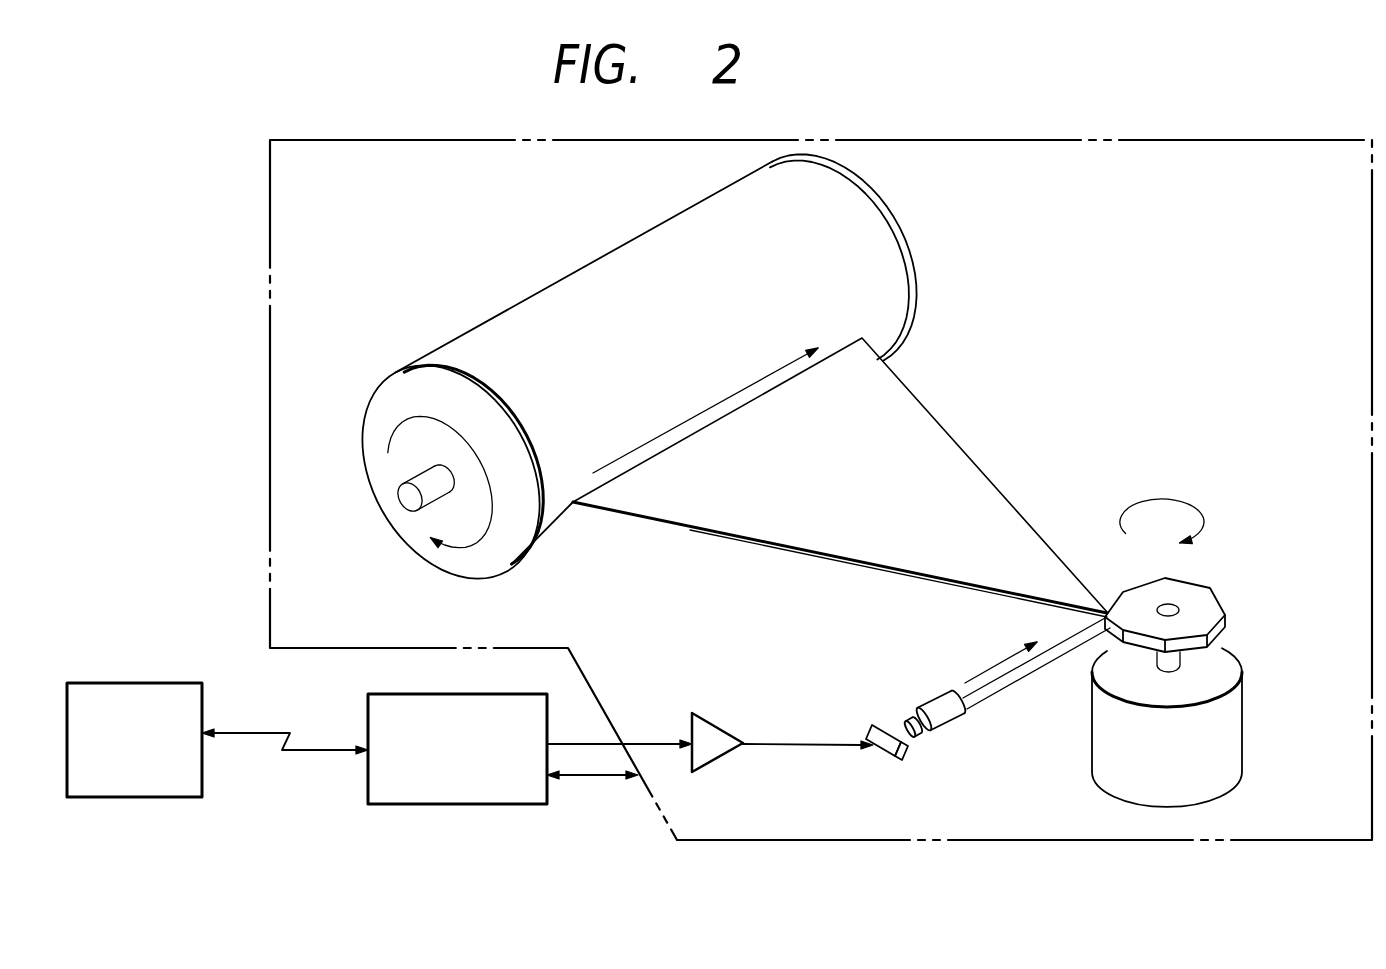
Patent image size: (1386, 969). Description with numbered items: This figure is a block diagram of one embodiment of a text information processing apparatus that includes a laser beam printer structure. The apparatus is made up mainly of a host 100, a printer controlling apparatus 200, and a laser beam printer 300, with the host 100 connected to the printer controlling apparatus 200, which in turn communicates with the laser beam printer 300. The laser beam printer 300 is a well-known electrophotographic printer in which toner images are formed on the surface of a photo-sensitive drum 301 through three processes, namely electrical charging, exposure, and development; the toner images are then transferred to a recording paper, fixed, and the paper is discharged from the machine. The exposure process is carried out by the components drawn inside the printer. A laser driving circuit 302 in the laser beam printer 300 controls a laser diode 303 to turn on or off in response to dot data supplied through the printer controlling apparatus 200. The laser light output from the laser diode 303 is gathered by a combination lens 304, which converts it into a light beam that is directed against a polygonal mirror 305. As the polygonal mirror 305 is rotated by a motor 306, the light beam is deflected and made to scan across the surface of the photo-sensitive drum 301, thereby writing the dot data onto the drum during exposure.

The host 100 is at (179, 682).
The printer controlling apparatus 200 is at (473, 694).
The laser beam printer 300 is at (1327, 140).
The photo-sensitive drum 301 is at (392, 500).
The laser driving circuit 302 is at (735, 722).
The laser diode 303 is at (885, 722).
The combination lens 304 is at (942, 693).
The polygonal mirror 305 is at (1215, 590).
The motor 306 is at (1242, 717).